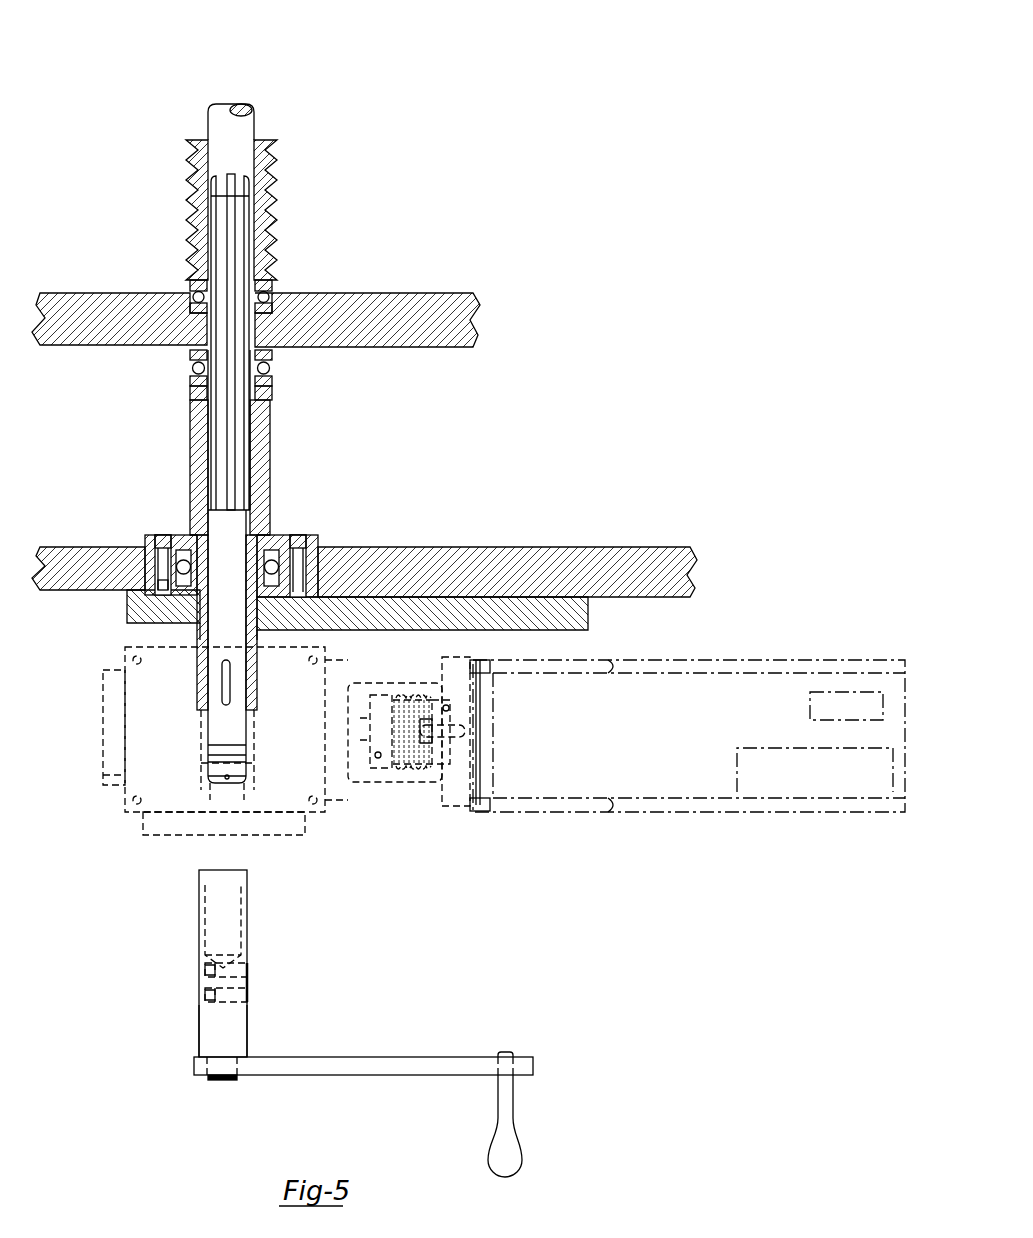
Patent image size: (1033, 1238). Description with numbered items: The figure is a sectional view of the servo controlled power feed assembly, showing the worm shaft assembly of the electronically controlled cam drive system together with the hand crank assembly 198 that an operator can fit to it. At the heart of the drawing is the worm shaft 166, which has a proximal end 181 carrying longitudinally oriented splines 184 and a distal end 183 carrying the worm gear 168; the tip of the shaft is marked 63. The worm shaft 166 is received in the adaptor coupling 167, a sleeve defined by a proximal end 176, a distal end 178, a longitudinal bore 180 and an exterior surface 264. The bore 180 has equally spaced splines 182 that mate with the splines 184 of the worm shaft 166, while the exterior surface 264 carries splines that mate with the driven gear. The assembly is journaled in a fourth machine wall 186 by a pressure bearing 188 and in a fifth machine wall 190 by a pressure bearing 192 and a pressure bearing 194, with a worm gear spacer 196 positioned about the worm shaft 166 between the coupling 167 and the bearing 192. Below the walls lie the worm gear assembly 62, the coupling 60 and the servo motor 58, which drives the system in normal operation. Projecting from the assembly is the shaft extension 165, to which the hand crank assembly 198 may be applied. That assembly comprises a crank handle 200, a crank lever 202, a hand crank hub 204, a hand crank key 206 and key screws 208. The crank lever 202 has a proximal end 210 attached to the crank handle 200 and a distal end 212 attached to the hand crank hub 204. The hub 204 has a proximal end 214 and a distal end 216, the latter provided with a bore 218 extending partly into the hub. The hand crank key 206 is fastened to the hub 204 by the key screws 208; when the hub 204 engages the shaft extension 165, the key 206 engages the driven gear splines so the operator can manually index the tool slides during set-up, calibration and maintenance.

The servo motor 58 is at (674, 816).
The coupling 60 is at (378, 799).
The worm gear assembly 62 is at (116, 810).
The shaft end 63 is at (237, 97).
The shaft extension 165 is at (218, 640).
The worm shaft 166 is at (245, 138).
The adaptor coupling 167 is at (196, 495).
The worm gear 168 is at (275, 200).
The proximal end 176 is at (188, 695).
The distal end 178 is at (145, 440).
The longitudinal bore 180 is at (214, 462).
The proximal end 181 is at (266, 736).
The splines 182 is at (249, 422).
The distal end 183 is at (118, 228).
The splines 184 is at (228, 400).
The fourth machine wall 186 is at (553, 565).
The pressure bearing 188 is at (311, 540).
The fifth machine wall 190 is at (437, 318).
The pressure bearing 192 is at (281, 357).
The pressure bearing 194 is at (281, 283).
The worm gear spacer 196 is at (271, 390).
The hand crank assembly 198 is at (366, 967).
The crank handle 200 is at (515, 1155).
The crank lever 202 is at (357, 1067).
The hand crank hub 204 is at (226, 1028).
The hand crank key 206 is at (250, 980).
The key screws 208 is at (205, 970).
The proximal end 210 is at (520, 1049).
The distal end 212 is at (240, 1084).
The proximal end 214 is at (195, 1038).
The distal end 216 is at (259, 893).
The bore 218 is at (222, 912).
The exterior surface 264 is at (256, 492).